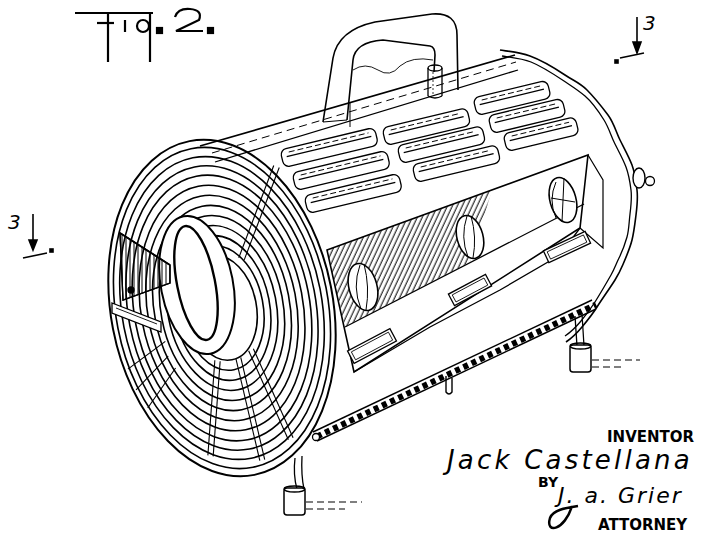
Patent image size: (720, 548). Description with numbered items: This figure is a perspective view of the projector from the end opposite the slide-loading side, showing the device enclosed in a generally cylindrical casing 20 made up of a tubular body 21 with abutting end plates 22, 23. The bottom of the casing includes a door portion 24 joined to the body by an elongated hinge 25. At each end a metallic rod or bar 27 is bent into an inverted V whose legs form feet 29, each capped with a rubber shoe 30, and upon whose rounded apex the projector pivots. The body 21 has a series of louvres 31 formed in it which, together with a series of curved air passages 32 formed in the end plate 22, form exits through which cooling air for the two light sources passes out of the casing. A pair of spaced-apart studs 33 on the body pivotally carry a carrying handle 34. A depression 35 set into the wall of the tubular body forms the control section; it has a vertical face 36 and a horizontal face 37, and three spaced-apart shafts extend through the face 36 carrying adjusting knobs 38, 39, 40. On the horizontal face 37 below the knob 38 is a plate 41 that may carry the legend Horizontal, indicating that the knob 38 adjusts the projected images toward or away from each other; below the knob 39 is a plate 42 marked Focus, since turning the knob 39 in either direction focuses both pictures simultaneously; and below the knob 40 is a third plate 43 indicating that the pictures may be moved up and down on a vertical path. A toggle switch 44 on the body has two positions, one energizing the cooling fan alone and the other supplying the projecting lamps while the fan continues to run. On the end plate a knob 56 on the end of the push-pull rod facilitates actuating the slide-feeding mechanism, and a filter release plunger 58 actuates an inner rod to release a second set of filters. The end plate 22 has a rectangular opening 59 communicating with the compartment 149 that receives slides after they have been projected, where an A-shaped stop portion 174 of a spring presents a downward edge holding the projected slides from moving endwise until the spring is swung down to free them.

The casing 20 is at (422, 173).
The tubular body 21 is at (310, 125).
The end plate 22 is at (208, 308).
The end plate 23 is at (625, 100).
The door portion 24 is at (318, 440).
The elongated hinge 25 is at (420, 388).
The metallic rod or bar 27 is at (436, 419).
The feet 29 is at (292, 480).
The shoes 30 is at (285, 503).
The louvres 31 is at (320, 153).
The curved air passages 32 is at (208, 200).
The studs 33 is at (426, 80).
The carrying handle 34 is at (432, 46).
The depression 35 is at (465, 263).
The vertical face 36 is at (405, 240).
The horizontal face 37 is at (438, 314).
The adjusting knob 38 is at (378, 283).
The adjusting knob 39 is at (475, 231).
The adjusting knob 40 is at (553, 204).
The plate 41 is at (379, 343).
The plate 42 is at (487, 299).
The third plate 43 is at (572, 252).
The toggle switch 44 is at (455, 386).
The knob 56 is at (641, 170).
The filter release plunger 58 is at (655, 180).
The rectangular opening 59 is at (118, 236).
The compartment 149 is at (130, 290).
The A-shaped stop portion 174 is at (117, 312).